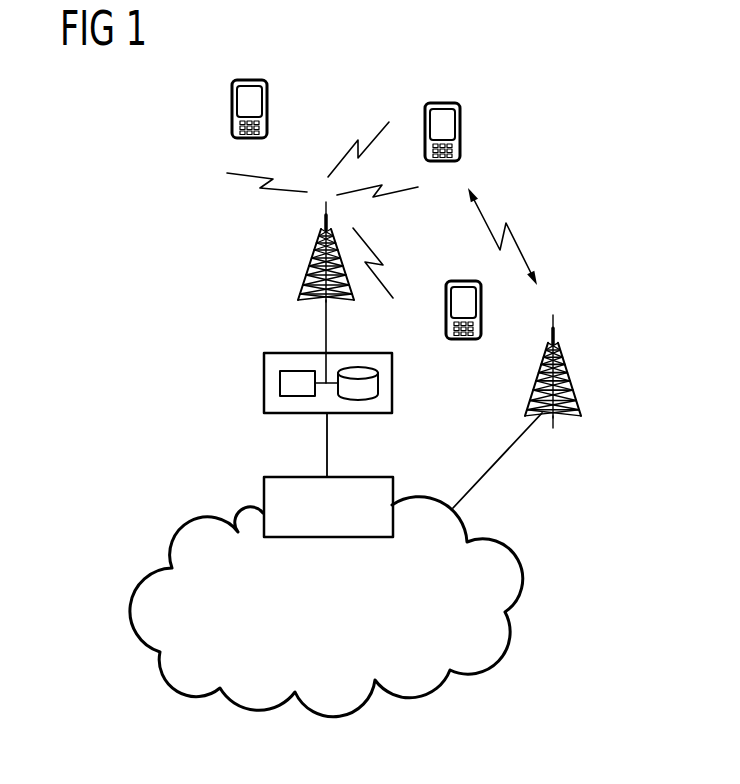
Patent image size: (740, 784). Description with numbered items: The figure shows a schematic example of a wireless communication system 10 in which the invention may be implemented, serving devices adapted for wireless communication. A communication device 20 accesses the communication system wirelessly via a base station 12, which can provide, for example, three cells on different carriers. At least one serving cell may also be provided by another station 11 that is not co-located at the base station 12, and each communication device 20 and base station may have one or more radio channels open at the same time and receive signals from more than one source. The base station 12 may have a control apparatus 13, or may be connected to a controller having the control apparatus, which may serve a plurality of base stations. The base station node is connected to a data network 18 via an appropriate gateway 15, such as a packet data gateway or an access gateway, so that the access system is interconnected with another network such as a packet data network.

The system 10 is at (168, 174).
The station 11 is at (574, 392).
The base station 12 is at (311, 258).
The control apparatus 13 is at (263, 384).
The gateway 15 is at (263, 500).
The data network 18 is at (124, 610).
The communication device 20 is at (461, 133).